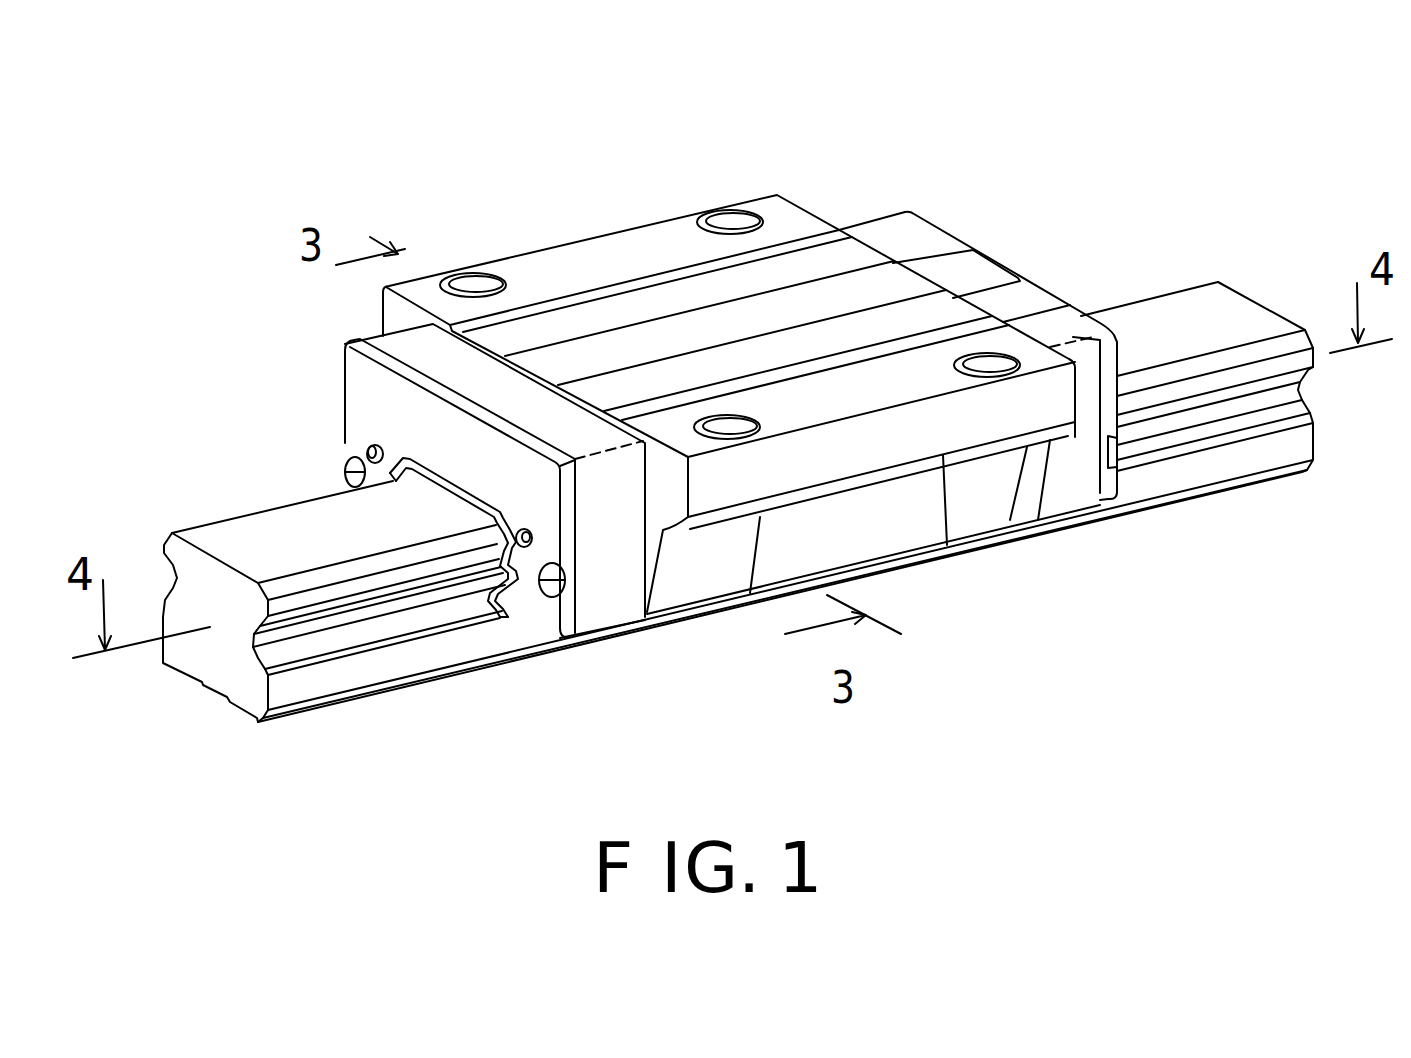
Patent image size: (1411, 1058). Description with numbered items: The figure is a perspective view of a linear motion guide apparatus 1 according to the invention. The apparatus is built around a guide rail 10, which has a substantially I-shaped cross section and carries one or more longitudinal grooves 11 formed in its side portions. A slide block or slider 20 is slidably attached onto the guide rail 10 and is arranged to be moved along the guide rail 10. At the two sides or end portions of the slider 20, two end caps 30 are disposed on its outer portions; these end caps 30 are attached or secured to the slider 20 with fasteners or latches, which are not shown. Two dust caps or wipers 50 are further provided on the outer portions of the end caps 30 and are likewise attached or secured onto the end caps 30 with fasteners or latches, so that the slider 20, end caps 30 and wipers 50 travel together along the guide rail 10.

The linear motion guide apparatus 1 is at (738, 383).
The guide rail 10 is at (268, 528).
The longitudinal groove 11 is at (1227, 415).
The slider 20 is at (662, 240).
The end cap 30 is at (886, 232).
The dust cap or wiper 50 is at (927, 218).